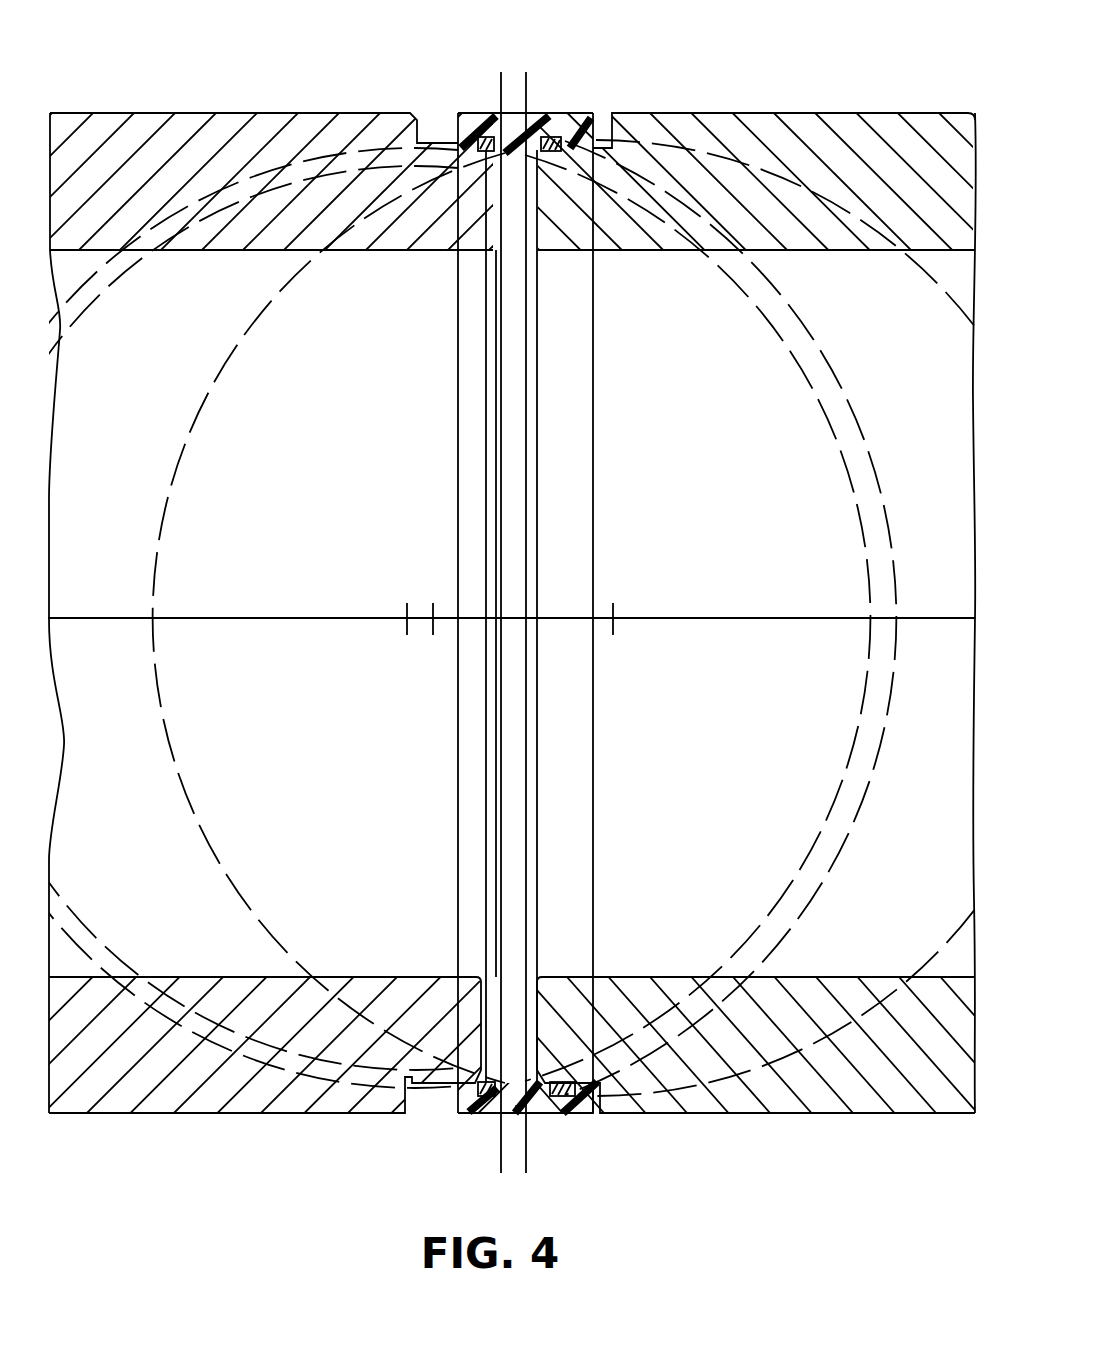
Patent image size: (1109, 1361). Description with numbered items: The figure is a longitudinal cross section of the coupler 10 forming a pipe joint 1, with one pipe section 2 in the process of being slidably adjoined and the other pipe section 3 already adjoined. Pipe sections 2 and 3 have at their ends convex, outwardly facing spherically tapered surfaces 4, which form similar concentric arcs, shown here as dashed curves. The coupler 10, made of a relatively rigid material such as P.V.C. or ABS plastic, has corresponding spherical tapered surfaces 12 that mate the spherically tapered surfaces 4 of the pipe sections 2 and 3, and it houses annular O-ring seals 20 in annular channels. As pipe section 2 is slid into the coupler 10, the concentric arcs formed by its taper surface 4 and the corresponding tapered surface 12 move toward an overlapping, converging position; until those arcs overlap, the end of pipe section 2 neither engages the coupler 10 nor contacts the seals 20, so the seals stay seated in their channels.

The pipe joint 1 is at (582, 81).
The pipe section 2 is at (298, 130).
The pipe section 3 is at (745, 125).
The spherically tapered surfaces 4 is at (463, 158).
The coupler 10 is at (552, 126).
The spherical tapered surfaces 12 is at (472, 131).
The annular seals 20 is at (484, 136).